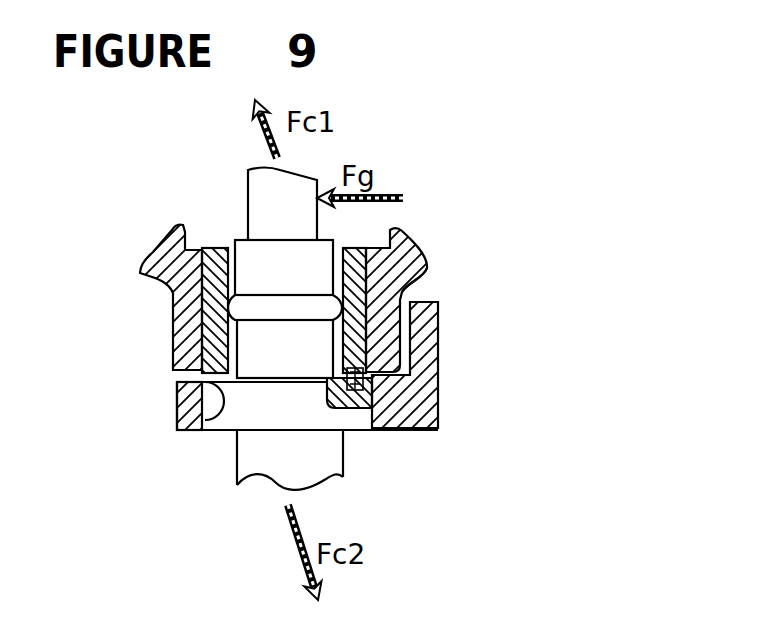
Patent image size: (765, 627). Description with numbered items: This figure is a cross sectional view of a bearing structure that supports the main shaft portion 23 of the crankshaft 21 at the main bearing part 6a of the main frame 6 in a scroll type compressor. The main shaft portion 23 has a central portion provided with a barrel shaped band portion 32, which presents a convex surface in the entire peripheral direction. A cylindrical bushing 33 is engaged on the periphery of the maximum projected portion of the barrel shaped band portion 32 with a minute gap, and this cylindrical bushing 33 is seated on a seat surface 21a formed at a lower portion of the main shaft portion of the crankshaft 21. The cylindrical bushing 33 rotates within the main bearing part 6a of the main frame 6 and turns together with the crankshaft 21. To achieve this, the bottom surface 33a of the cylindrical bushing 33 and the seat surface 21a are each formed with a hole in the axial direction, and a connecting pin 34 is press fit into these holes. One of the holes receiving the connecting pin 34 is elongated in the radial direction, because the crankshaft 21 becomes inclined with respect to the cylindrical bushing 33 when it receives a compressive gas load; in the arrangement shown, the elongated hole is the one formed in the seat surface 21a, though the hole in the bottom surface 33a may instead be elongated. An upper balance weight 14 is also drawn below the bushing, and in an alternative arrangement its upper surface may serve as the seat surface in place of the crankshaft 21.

The main shaft portion 23 is at (209, 264).
The barrel shaped band portion 32 is at (247, 307).
The cylindrical bushing 33 is at (212, 350).
The bottom surface 33a is at (365, 372).
The main frame 6 is at (408, 248).
The main bearing part 6a is at (427, 268).
The upper balance weight 14 is at (425, 373).
The connecting pin 34 is at (363, 390).
The crankshaft 21 is at (343, 467).
The seat surface 21a is at (177, 430).